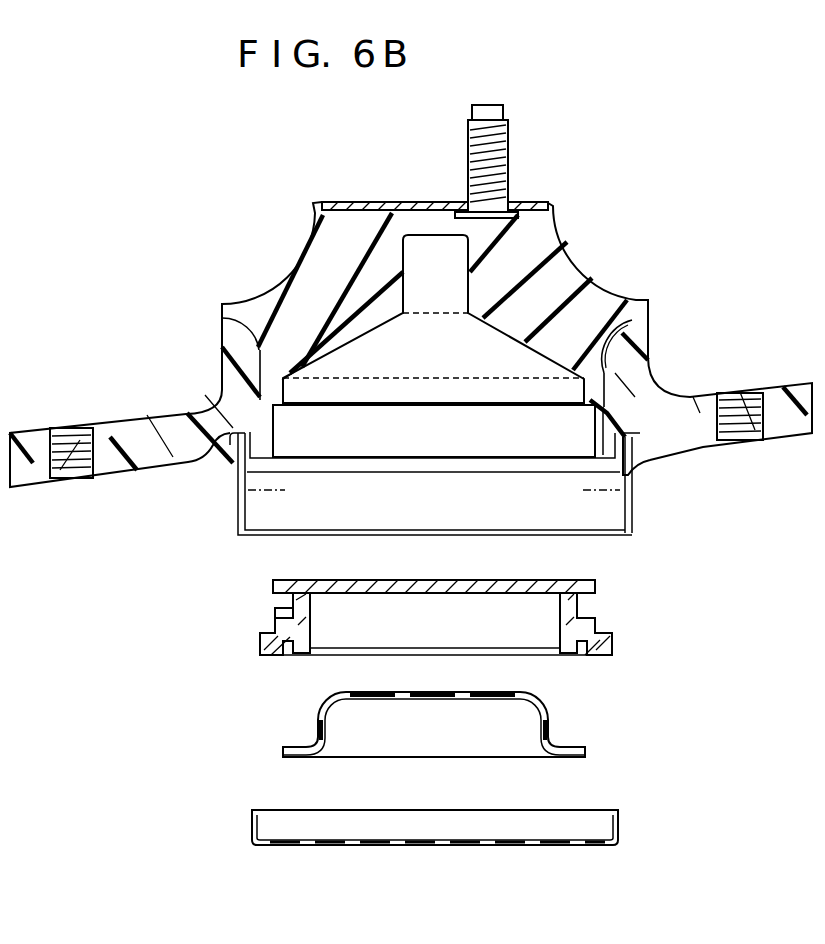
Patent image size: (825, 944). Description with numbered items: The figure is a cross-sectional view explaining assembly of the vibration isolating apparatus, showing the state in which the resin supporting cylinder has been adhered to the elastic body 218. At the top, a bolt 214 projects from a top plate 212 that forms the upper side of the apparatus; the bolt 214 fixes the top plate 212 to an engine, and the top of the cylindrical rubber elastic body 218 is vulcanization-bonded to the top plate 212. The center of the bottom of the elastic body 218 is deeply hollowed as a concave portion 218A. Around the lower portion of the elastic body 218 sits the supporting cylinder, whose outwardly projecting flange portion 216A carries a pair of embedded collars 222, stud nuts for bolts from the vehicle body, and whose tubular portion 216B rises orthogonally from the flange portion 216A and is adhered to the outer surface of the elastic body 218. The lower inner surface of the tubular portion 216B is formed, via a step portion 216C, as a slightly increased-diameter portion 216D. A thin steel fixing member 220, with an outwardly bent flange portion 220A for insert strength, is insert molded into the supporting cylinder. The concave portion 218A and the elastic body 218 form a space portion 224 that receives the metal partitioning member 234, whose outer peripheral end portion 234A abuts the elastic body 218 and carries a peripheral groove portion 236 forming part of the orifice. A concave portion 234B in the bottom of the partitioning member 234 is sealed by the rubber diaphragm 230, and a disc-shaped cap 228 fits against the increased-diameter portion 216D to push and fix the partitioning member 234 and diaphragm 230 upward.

The top plate 212 is at (537, 203).
The bolt 214 is at (502, 158).
The flange portion 216A is at (798, 382).
The tubular portion 216B is at (638, 365).
The step portion 216C is at (597, 453).
The increased-diameter portion 216D is at (615, 468).
The elastic body 218 is at (297, 272).
The concave portion 218A is at (492, 330).
The fixing member 220 is at (237, 497).
The flange portion 220A is at (228, 437).
The collars 222 is at (113, 473).
The space portion 224 is at (440, 446).
The cap 228 is at (620, 823).
The diaphragm 230 is at (550, 714).
The partitioning member 234 is at (527, 585).
The outer peripheral end portion 234A is at (603, 628).
The concave portion 234B is at (312, 617).
The groove portion 236 is at (292, 610).